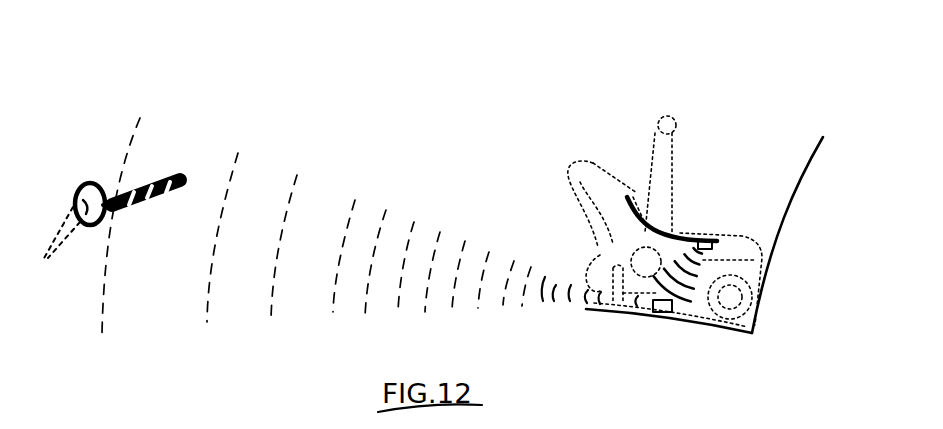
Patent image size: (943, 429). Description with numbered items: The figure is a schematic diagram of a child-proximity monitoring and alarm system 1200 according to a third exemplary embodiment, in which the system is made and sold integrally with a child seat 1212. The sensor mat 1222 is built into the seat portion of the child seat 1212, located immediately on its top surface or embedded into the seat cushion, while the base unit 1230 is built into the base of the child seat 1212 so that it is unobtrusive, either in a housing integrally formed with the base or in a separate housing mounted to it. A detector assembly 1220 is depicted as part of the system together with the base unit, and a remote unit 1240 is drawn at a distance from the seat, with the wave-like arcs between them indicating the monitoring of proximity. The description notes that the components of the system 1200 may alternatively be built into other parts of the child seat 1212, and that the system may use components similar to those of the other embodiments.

The child-proximity monitoring and alarm system 1200 is at (705, 125).
The child seat 1212 is at (565, 172).
The antenna tower 1220 is at (700, 218).
The sensor mat 1222 is at (634, 195).
The base unit 1230 is at (660, 315).
The key fob transmitter 1240 is at (143, 182).